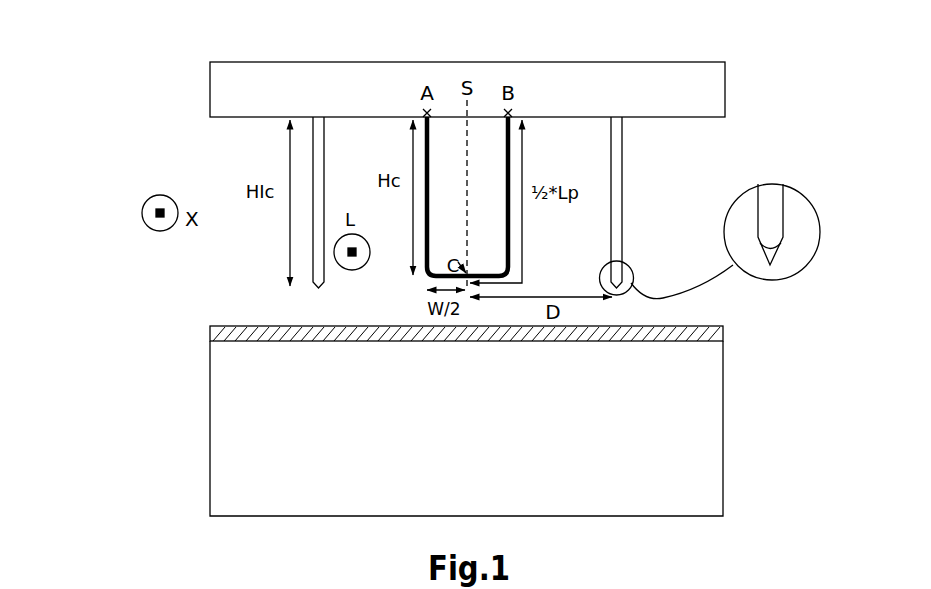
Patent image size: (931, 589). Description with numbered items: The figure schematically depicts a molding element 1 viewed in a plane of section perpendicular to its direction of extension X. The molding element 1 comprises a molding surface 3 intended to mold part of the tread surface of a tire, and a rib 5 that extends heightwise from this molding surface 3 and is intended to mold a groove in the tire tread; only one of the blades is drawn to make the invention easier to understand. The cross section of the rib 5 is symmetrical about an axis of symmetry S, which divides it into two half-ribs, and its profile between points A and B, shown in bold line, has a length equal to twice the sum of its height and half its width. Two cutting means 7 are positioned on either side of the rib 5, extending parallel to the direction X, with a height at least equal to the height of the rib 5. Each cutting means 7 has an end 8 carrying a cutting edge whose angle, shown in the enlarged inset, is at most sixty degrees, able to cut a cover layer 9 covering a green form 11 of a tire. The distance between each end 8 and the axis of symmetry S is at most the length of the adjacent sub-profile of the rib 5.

The molding element 1 is at (174, 86).
The molding surface 3 is at (686, 118).
The rib 5 is at (493, 200).
The cutting means 7 is at (620, 242).
The end of the cutting means 8 is at (790, 237).
The cover layer 9 is at (714, 330).
The green form 11 is at (738, 341).